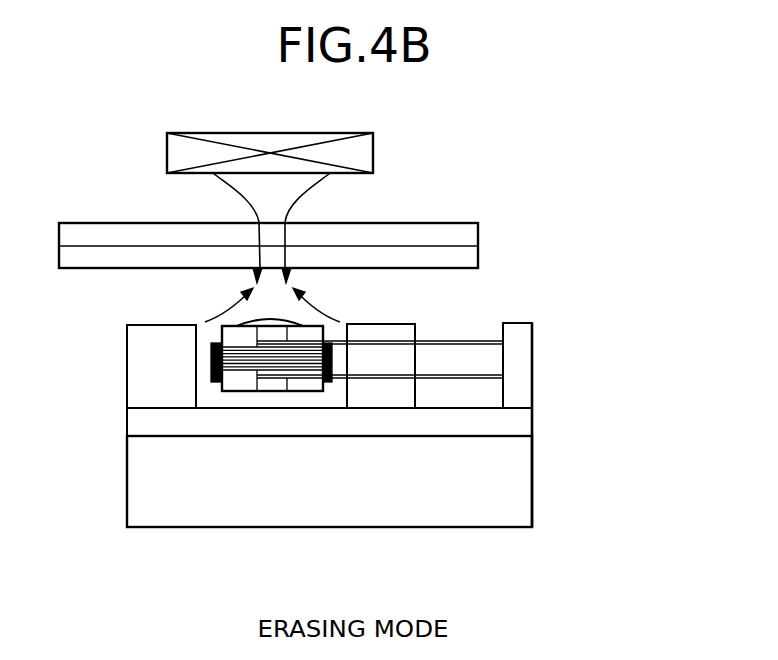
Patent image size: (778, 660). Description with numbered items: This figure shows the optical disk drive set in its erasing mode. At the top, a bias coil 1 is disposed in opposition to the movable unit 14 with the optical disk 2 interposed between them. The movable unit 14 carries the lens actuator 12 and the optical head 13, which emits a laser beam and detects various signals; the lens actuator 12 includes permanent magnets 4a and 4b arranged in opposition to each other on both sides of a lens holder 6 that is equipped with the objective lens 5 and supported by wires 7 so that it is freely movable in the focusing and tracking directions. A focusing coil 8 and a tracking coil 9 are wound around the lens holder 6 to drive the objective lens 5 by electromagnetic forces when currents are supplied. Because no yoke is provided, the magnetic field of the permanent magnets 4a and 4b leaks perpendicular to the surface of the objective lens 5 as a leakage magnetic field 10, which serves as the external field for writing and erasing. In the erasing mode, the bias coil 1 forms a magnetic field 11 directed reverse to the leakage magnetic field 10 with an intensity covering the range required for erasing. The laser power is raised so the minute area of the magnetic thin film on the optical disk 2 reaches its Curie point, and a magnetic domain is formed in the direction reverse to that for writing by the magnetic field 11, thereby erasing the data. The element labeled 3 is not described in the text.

The bias coil 1 is at (367, 150).
The optical disk 2 is at (470, 236).
The substrate 3 is at (517, 427).
The permanent magnet 4a is at (392, 330).
The permanent magnet 4b is at (137, 343).
The objective lens 5 is at (240, 308).
The lens holder 6 is at (237, 385).
The wires 7 is at (490, 336).
The focusing coil 8 is at (250, 367).
The tracking coil 9 is at (211, 372).
The leakage magnetic field 10 is at (312, 297).
The magnetic field 11 is at (305, 197).
The lens actuator 12 is at (345, 433).
The optical head 13 is at (517, 508).
The movable unit 14 is at (379, 433).